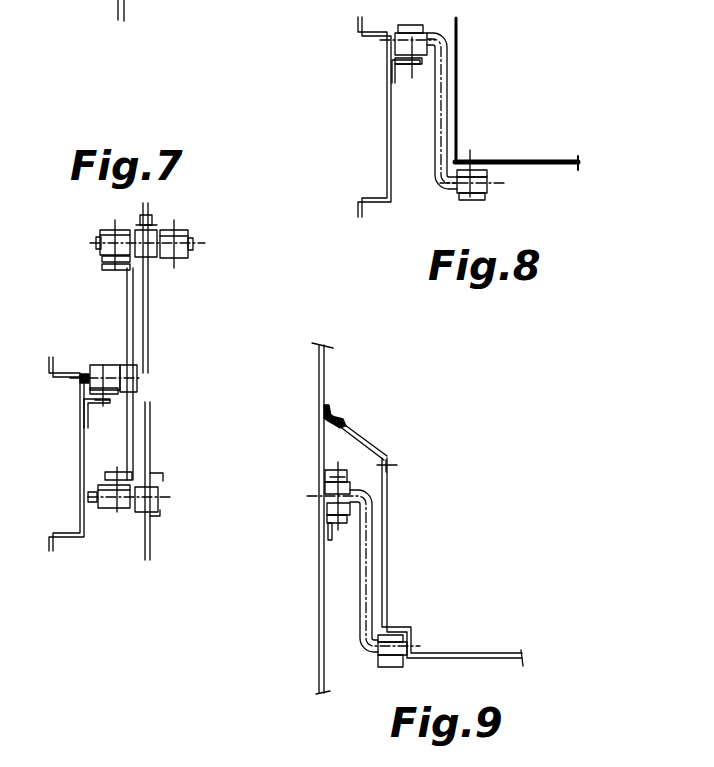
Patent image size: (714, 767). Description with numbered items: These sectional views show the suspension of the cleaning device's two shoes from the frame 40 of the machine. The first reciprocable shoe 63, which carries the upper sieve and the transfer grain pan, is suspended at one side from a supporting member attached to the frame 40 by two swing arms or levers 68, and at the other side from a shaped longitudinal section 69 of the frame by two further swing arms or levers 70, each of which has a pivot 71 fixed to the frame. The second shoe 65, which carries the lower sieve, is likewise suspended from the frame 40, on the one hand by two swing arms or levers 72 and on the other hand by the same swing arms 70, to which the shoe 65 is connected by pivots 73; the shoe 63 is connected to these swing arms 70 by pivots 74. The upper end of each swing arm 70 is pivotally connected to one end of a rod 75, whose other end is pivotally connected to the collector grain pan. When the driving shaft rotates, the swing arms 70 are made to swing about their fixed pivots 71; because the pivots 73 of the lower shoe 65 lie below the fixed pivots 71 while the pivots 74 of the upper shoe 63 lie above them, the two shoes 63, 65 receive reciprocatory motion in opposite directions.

In FIG. 9, the frame 40 is at (321, 642).
In FIG. 9, the first reciprocable shoe 63 is at (498, 634).
In FIG. 8, the second shoe 65 is at (563, 144).
In FIG. 9, the swing arm or lever 68 is at (367, 562).
In FIG. 7, the shaped longitudinal section 69 is at (80, 475).
In FIG. 8, the shaped longitudinal section 69 is at (387, 142).
In FIG. 7, the swing arm or lever 70 is at (131, 423).
In FIG. 7, the pivot 71 is at (104, 366).
In FIG. 8, the swing arm or lever 72 is at (447, 91).
In FIG. 7, the pivot 73 is at (113, 513).
In FIG. 7, the pivot 74 is at (118, 238).
In FIG. 7, the rod 75 is at (182, 234).